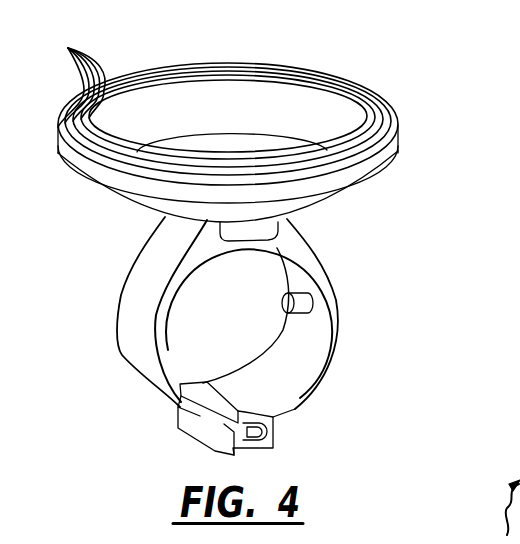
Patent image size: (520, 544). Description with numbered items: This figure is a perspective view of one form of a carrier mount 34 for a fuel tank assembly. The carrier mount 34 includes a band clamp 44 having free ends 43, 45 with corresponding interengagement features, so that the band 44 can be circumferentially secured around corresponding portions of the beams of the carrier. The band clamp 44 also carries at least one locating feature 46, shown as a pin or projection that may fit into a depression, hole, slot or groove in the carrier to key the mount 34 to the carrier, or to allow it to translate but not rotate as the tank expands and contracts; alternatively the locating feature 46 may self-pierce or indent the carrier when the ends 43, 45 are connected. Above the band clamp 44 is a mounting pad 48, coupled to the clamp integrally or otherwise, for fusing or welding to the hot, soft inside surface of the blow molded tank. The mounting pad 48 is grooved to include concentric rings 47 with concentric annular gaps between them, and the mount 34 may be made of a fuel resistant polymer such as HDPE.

The carrier mount 34 is at (92, 353).
The free end 43 is at (220, 446).
The band clamp 44 is at (104, 311).
The free end 45 is at (274, 440).
The locating feature 46 is at (283, 307).
The concentric rings 47 is at (221, 99).
The mounting pad 48 is at (417, 105).